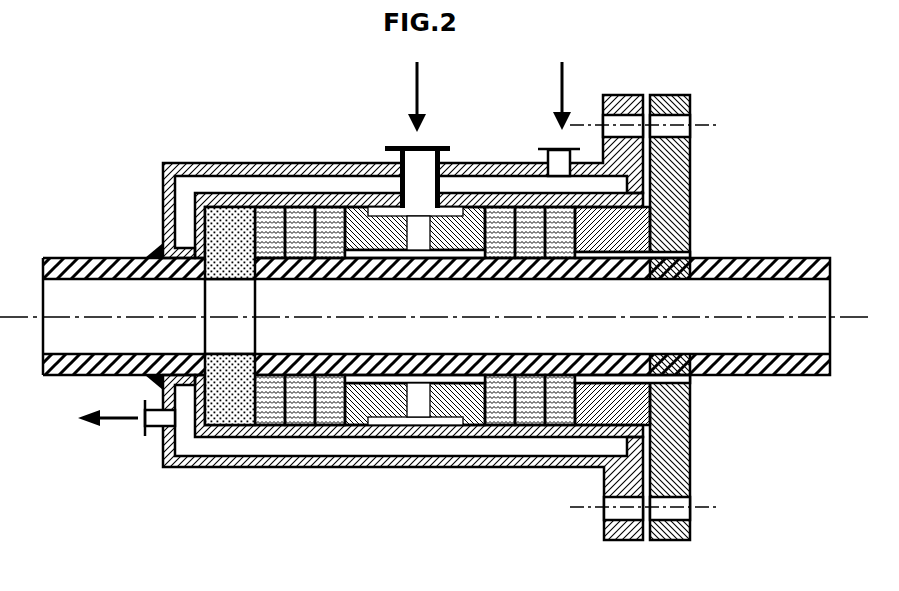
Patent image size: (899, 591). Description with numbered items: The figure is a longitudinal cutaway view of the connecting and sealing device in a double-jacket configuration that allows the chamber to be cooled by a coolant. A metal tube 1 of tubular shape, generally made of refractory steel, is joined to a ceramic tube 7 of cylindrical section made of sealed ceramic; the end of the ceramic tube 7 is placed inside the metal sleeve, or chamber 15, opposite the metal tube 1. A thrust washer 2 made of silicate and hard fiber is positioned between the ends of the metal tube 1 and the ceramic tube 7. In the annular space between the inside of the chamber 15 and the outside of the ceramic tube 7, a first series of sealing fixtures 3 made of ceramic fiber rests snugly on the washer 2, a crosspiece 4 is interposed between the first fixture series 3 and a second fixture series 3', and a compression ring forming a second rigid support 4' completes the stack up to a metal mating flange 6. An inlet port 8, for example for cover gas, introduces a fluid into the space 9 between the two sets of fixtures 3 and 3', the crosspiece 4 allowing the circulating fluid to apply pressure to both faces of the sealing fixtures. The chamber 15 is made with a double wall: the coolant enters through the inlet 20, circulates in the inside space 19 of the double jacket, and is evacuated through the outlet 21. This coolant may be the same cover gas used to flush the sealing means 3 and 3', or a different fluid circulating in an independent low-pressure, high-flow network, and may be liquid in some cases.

The metal tube 1 is at (75, 258).
The thrust washer 2 is at (235, 376).
The first series of sealing fixtures 3 is at (300, 365).
The second fixture series 3' is at (525, 367).
The crosspiece 4 is at (415, 367).
The compression ring 4' is at (617, 367).
The metal mating flange 6 is at (668, 483).
The ceramic tube 7 is at (745, 375).
The inlet port 8 is at (418, 164).
The space 9 is at (420, 400).
The metal double-jacket chamber 15 is at (200, 466).
The inside space 19 is at (290, 193).
The inlet 20 is at (560, 160).
The outlet 21 is at (158, 418).